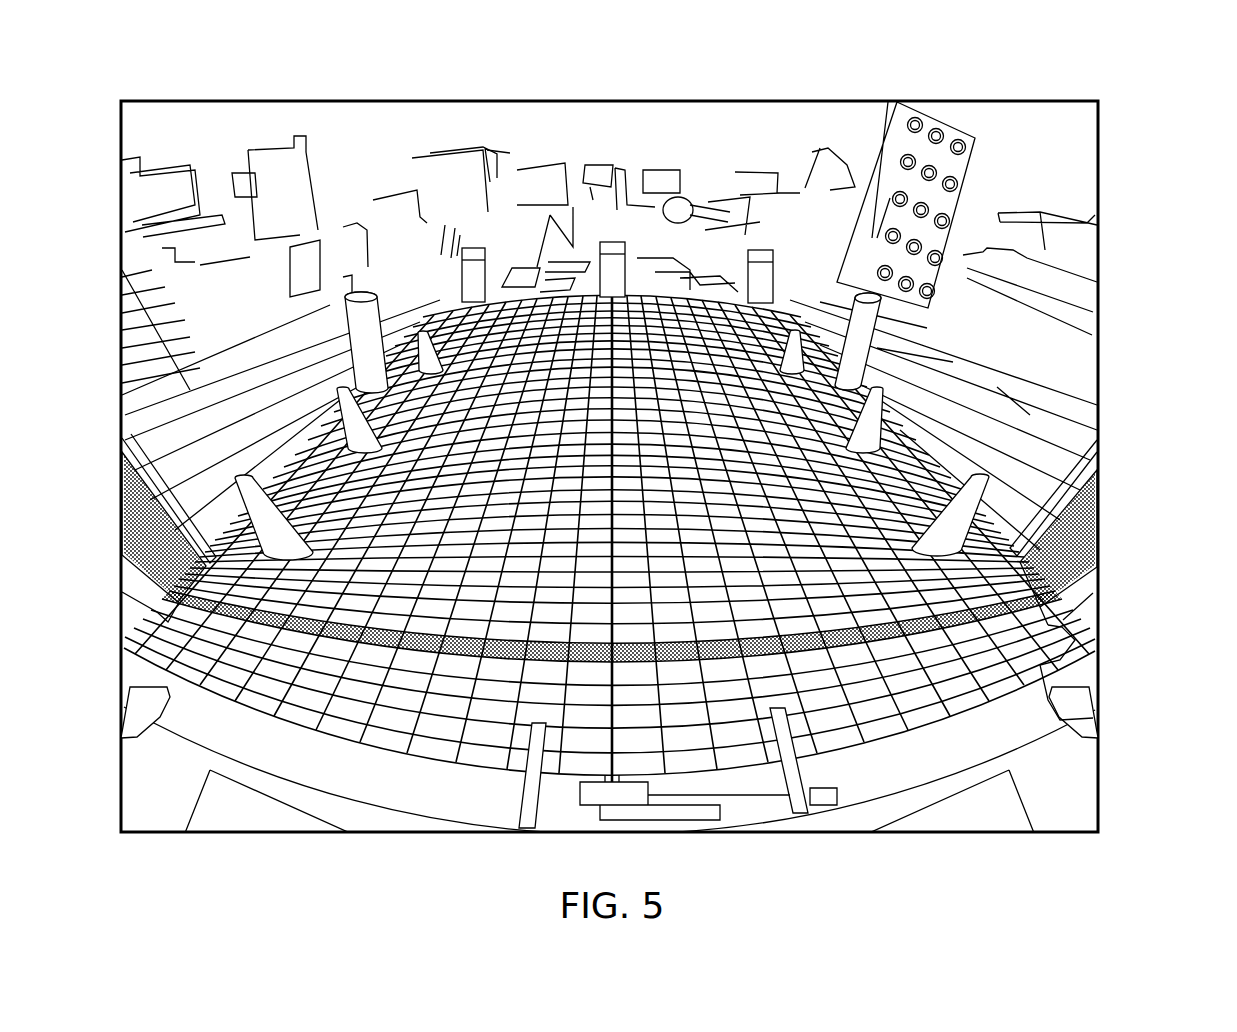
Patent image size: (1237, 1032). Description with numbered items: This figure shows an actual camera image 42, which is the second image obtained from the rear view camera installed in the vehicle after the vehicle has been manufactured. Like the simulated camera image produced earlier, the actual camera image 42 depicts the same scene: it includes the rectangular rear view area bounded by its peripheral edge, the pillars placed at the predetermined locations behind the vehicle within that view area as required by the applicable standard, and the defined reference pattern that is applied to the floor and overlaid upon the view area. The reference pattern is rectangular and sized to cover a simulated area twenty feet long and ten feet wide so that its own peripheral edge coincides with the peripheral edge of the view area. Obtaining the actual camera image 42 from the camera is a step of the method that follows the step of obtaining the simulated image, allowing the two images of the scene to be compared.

The actual camera image 42 is at (347, 80).